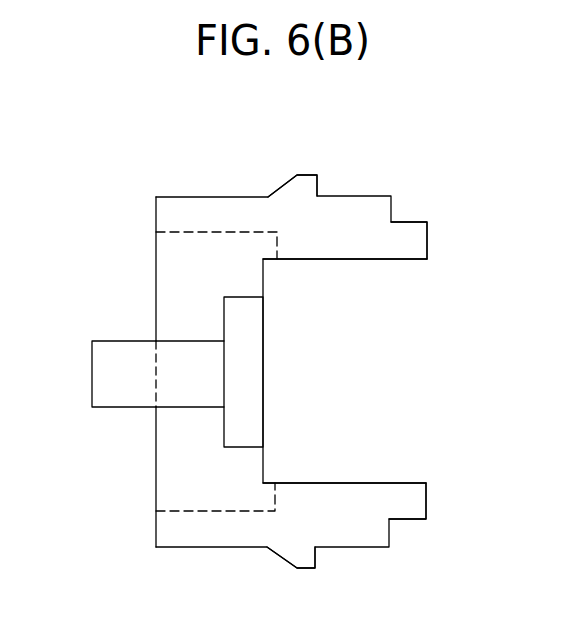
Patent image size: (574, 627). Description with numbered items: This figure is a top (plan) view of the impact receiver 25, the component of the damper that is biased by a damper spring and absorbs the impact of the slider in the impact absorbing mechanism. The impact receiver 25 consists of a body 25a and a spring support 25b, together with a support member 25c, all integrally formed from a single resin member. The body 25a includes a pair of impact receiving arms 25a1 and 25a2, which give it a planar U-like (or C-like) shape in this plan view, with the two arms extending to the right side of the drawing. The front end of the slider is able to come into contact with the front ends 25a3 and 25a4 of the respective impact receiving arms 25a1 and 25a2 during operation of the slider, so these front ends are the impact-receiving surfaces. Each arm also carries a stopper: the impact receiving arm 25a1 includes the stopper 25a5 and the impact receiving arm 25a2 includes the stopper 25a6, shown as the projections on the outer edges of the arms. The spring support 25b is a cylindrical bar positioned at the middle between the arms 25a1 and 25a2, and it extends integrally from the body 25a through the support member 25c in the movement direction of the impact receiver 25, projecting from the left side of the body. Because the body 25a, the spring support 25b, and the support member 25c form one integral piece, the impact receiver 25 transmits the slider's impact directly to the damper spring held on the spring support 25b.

The impact receiver 25 is at (160, 177).
The body 25a is at (163, 491).
The impact receiving arm 25a1 is at (340, 482).
The impact receiving arm 25a2 is at (363, 247).
The front end 25a3 is at (427, 493).
The front end 25a4 is at (426, 243).
The stopper 25a5 is at (305, 560).
The stopper 25a6 is at (307, 176).
The spring support 25b is at (97, 379).
The support member 25c is at (279, 375).